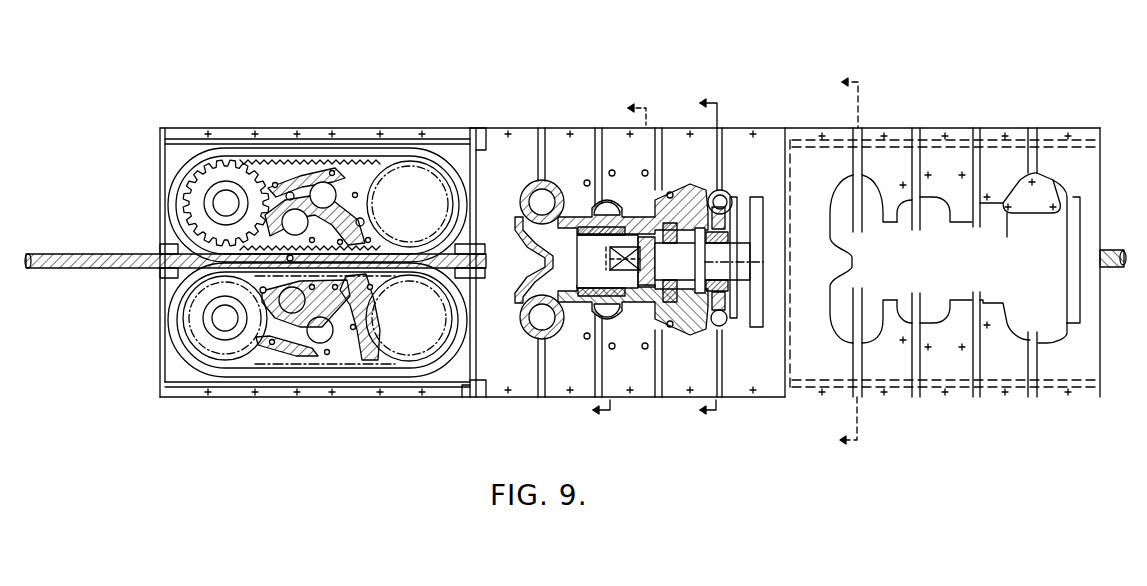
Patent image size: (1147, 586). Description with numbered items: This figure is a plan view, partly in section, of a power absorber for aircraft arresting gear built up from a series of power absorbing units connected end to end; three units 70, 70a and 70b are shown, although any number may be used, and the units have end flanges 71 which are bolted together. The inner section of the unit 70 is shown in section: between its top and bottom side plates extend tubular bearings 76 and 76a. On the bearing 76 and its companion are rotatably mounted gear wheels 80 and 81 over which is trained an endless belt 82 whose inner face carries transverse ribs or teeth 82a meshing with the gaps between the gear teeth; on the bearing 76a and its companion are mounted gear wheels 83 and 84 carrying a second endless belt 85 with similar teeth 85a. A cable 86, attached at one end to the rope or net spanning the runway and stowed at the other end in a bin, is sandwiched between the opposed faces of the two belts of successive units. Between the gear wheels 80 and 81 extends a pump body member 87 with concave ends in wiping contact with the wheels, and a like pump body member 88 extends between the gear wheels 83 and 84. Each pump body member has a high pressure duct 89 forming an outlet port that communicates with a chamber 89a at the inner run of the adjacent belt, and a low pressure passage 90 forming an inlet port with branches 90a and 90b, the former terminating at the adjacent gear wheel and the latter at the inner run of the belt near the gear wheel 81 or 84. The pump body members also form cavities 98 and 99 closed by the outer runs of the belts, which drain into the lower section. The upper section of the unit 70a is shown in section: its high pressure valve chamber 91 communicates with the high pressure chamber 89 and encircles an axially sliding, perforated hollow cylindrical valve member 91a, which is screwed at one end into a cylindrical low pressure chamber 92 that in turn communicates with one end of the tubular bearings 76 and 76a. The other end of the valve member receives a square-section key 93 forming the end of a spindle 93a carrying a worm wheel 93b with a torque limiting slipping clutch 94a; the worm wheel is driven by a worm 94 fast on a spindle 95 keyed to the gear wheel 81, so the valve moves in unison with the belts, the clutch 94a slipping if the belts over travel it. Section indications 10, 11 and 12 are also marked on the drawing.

The section line 10 is at (847, 265).
The section line 11 is at (713, 259).
The section line 12 is at (616, 261).
The power absorbing unit 70 is at (273, 142).
The power absorbing unit 70a is at (605, 124).
The power absorbing unit 70b is at (896, 120).
The end flange 71 is at (474, 400).
The tubular bearing 76 is at (246, 188).
The tubular bearing 76a is at (205, 327).
The gear wheel 80 is at (217, 175).
The gear wheel 81 is at (419, 168).
The endless belt 82 is at (229, 166).
The transverse ribs or teeth 82a is at (392, 160).
The gear wheel 83 is at (185, 304).
The gear wheel 84 is at (428, 338).
The endless belt 85 is at (272, 375).
The transverse ribs or teeth 85a is at (340, 320).
The cable 86 is at (68, 254).
The pump body member 87 is at (343, 182).
The pump body member 88 is at (313, 354).
The high pressure duct 89 is at (293, 261).
The chamber 89a is at (288, 260).
The low pressure passage 90 is at (321, 262).
The branch 90a is at (290, 192).
The branch 90b is at (350, 228).
The high pressure valve chamber 91 is at (618, 212).
The valve member 91a is at (584, 304).
The low pressure chamber 92 is at (576, 272).
The key 93 is at (628, 266).
The spindle 93a is at (690, 282).
The worm wheel 93b is at (712, 308).
The worm 94 is at (723, 190).
The torque limiting device 94a is at (728, 237).
The spindle 95 is at (742, 202).
The cavity 98 is at (320, 172).
The cavity 99 is at (353, 358).